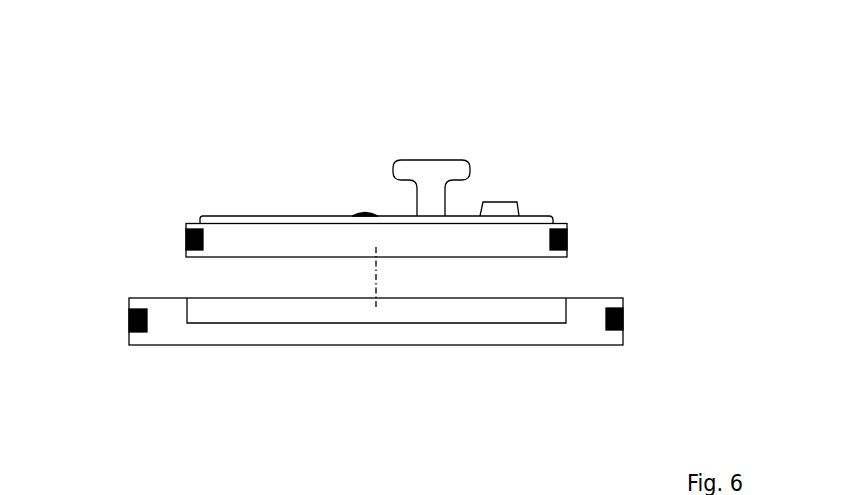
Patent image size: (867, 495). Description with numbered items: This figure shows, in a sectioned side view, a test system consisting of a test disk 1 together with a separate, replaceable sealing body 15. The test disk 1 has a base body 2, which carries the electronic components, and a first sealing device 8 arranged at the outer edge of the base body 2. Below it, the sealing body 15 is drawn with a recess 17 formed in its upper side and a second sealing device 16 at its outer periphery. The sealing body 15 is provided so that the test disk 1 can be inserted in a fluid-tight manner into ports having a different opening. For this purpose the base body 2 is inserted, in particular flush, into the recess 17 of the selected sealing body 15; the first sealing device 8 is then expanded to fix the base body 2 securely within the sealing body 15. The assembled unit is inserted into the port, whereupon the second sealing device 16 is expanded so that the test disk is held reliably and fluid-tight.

The test disk 1 is at (148, 90).
The base body 2 is at (224, 231).
The first sealing device 8 is at (186, 242).
The sealing body 15 is at (170, 339).
The second sealing device 16 is at (130, 323).
The recess 17 is at (517, 310).